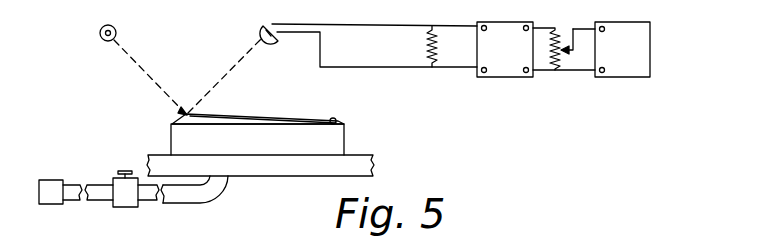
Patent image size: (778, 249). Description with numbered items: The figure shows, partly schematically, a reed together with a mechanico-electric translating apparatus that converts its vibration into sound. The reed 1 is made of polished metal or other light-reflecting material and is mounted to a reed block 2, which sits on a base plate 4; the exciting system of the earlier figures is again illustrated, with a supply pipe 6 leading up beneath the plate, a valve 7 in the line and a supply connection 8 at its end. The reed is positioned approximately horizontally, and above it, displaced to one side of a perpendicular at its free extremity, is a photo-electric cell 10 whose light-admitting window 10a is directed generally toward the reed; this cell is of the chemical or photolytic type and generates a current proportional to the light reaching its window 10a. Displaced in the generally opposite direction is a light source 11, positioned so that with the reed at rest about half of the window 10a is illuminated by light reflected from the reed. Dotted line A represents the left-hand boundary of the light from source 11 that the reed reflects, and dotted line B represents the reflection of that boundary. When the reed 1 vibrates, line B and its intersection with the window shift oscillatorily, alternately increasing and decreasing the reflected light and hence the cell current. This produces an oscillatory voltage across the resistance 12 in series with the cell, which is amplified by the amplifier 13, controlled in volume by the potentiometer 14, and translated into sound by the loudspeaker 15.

The reed 1 is at (247, 120).
The reed block 2 is at (338, 140).
The base plate 4 is at (370, 168).
The supply pipe 6 is at (221, 194).
The valve 7 is at (121, 172).
The supply connection 8 is at (47, 180).
The photo-electric cell 10 is at (266, 27).
The light-admitting window 10a is at (262, 34).
The light source 11 is at (100, 38).
The resistance 12 is at (428, 46).
The amplifier 13 is at (508, 78).
The potentiometer 14 is at (566, 60).
The loudspeaker 15 is at (614, 78).
The dotted line A is at (160, 83).
The dotted line B is at (236, 69).